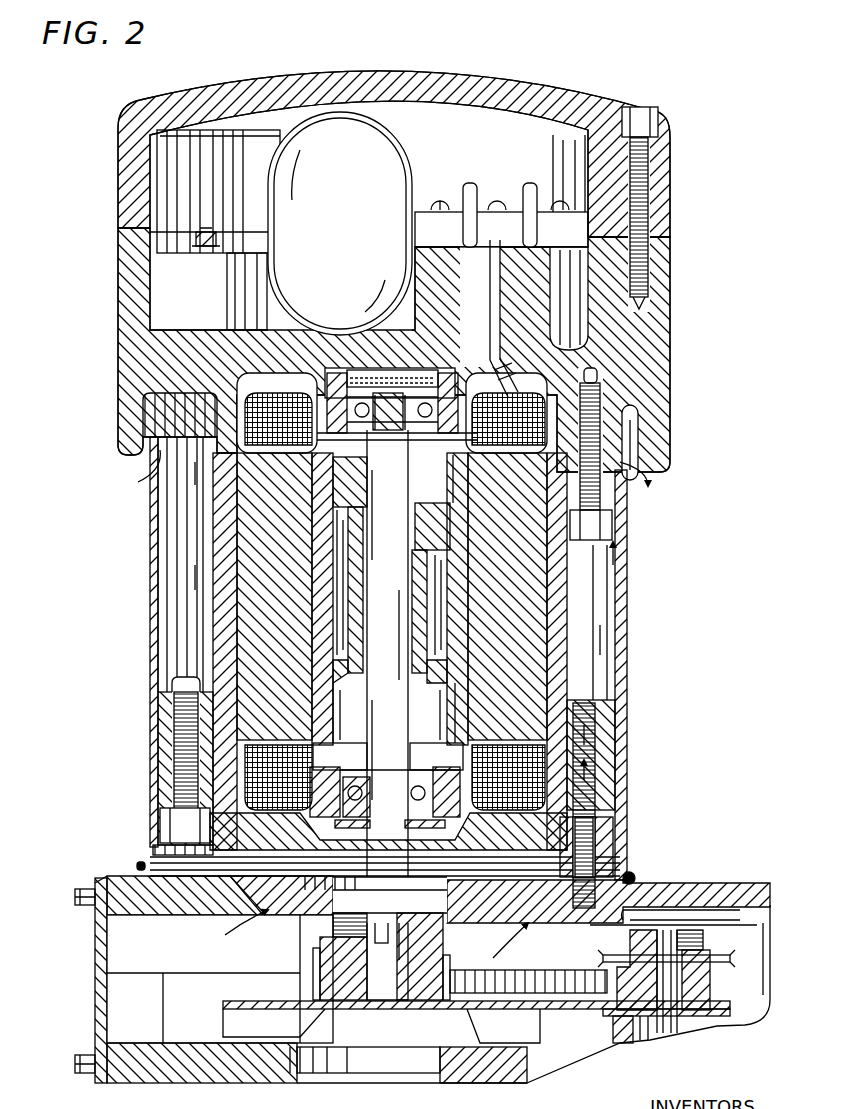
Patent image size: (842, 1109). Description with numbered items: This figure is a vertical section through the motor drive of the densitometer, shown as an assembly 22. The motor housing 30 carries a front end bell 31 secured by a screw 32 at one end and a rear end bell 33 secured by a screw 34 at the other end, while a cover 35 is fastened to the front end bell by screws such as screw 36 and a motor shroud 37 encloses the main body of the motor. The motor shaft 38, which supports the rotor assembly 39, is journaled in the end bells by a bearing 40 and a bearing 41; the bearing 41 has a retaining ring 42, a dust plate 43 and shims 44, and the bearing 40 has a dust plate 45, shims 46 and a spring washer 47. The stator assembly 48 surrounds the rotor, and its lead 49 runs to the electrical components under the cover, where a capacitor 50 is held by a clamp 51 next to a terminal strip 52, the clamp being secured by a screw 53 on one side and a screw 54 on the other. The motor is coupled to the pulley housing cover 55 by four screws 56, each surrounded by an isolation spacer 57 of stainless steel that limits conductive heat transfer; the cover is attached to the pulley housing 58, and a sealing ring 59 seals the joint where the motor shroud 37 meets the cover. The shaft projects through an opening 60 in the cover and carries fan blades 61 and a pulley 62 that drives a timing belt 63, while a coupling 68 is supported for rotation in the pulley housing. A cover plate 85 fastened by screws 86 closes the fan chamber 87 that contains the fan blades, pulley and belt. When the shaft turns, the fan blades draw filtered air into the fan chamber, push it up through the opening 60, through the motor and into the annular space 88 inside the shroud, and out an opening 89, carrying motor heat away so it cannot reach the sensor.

The motor-pump assembly 22 is at (703, 488).
The housing 30 is at (222, 520).
The front end bell 31 is at (118, 268).
The screw 32 is at (600, 528).
The rear end bell 33 is at (162, 752).
The screw 34 is at (176, 790).
The cover 35 is at (118, 155).
The screw 36 is at (636, 110).
The motor shroud 37 is at (152, 628).
The motor shaft 38 is at (400, 646).
The rotor assembly 39 is at (446, 487).
The bearing 40 is at (458, 376).
The bearing 41 is at (492, 823).
The retaining ring 42 is at (425, 830).
The dust plate 43 is at (345, 822).
The shims 44 is at (318, 813).
The dust plate 45 is at (335, 372).
The shims 46 is at (392, 372).
The spring washer 47 is at (420, 372).
The stator assembly 48 is at (276, 392).
The lead 49 is at (505, 372).
The capacitor 50 is at (353, 216).
The clamp 51 is at (413, 164).
The terminal strip 52 is at (445, 232).
The screw 53 is at (478, 188).
The screw 54 is at (214, 234).
The pulley housing cover 55 is at (714, 892).
The screws 56 is at (597, 805).
The isolation spacers 57 is at (614, 833).
The pulley housing 58 is at (165, 1083).
The sealing ring 59 is at (634, 875).
The opening 60 is at (446, 910).
The fan blades 61 is at (538, 1003).
The pulley 62 is at (330, 948).
The timing belt 63 is at (548, 976).
The coupling 68 is at (668, 1038).
The cover plate 85 is at (95, 950).
The screws 86 is at (78, 896).
The fan chamber 87 is at (191, 953).
The annular space 88 is at (203, 560).
The opening 89 is at (403, 468).